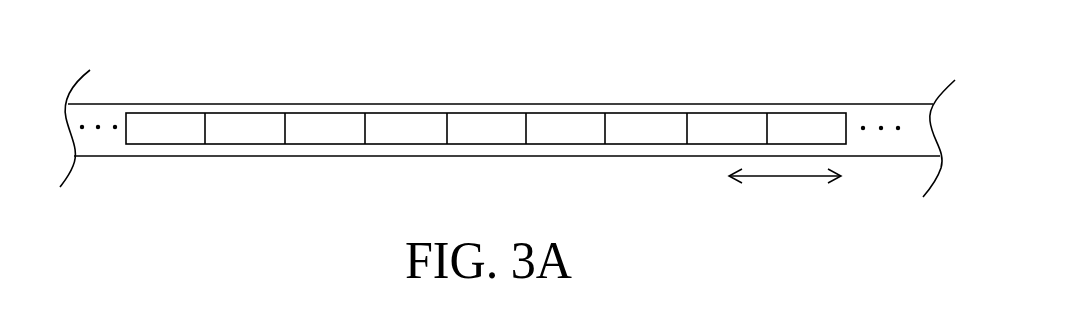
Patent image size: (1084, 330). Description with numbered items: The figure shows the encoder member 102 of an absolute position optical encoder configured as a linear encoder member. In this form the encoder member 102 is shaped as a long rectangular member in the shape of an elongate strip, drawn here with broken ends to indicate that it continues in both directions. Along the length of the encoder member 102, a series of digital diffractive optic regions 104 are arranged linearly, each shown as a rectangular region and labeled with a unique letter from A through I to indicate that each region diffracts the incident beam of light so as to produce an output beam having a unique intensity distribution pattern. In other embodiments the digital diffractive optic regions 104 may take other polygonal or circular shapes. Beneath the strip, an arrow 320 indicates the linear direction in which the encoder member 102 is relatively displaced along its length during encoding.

The encoder member 102 is at (830, 103).
The digital diffractive optic regions 104 is at (183, 122).
The arrow 320 is at (787, 174).